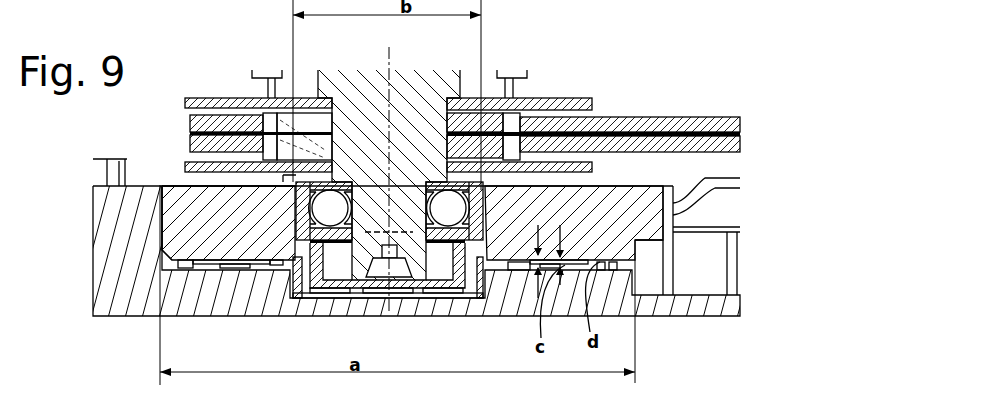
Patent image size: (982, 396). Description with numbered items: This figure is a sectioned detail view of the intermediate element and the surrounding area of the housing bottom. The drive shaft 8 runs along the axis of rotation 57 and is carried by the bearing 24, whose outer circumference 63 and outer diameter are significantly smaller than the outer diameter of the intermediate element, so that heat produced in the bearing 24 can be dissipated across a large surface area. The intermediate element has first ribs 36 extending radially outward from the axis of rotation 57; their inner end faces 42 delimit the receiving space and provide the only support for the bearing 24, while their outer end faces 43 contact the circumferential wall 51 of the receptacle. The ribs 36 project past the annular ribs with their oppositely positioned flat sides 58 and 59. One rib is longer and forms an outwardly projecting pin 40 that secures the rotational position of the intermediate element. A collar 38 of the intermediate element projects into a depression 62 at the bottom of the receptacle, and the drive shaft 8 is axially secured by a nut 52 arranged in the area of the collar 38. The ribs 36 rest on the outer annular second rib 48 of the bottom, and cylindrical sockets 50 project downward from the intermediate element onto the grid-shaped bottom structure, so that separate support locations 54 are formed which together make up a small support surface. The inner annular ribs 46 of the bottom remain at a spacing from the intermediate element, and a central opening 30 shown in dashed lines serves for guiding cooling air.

The drive shaft 8 is at (425, 97).
The bearing 24 is at (442, 222).
The opening 30 is at (427, 303).
The first ribs 36 is at (208, 232).
The collar 38 is at (477, 260).
The pin 40 is at (652, 227).
The inner end faces 42 is at (488, 196).
The outer end faces 43 is at (164, 186).
The annular ribs 46 is at (247, 268).
The second ribs 48 is at (163, 183).
The sockets 50 is at (278, 265).
The circumferential wall 51 is at (163, 213).
The nut 52 is at (335, 262).
The support locations 54 is at (182, 186).
The axis of rotation 57 is at (388, 50).
The flat side 58 is at (245, 186).
The flat side 59 is at (607, 267).
The depression 62 is at (299, 272).
The outer circumference 63 is at (292, 196).